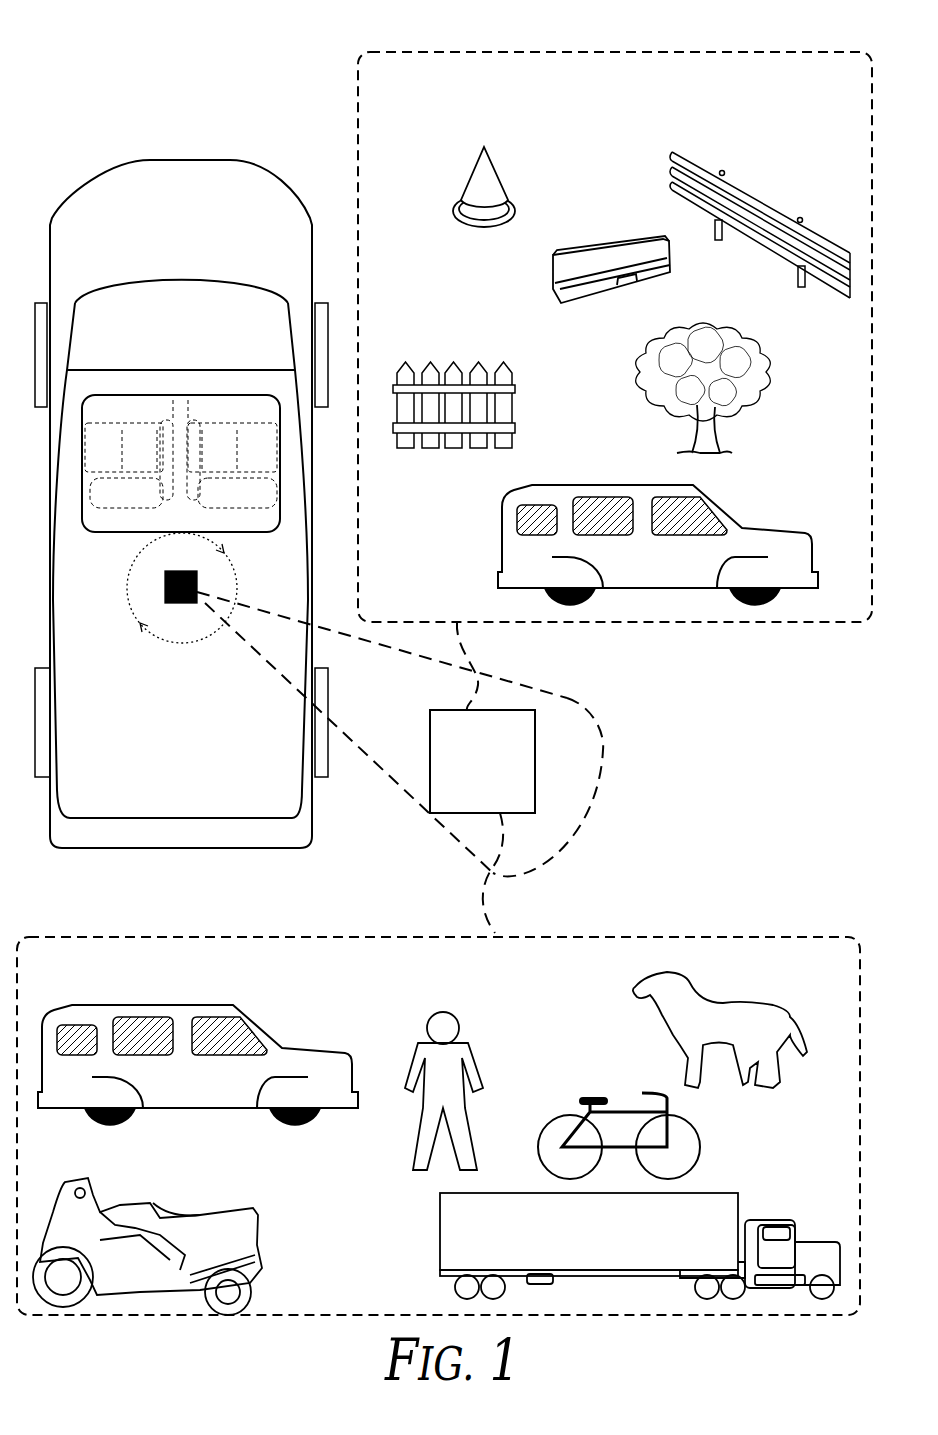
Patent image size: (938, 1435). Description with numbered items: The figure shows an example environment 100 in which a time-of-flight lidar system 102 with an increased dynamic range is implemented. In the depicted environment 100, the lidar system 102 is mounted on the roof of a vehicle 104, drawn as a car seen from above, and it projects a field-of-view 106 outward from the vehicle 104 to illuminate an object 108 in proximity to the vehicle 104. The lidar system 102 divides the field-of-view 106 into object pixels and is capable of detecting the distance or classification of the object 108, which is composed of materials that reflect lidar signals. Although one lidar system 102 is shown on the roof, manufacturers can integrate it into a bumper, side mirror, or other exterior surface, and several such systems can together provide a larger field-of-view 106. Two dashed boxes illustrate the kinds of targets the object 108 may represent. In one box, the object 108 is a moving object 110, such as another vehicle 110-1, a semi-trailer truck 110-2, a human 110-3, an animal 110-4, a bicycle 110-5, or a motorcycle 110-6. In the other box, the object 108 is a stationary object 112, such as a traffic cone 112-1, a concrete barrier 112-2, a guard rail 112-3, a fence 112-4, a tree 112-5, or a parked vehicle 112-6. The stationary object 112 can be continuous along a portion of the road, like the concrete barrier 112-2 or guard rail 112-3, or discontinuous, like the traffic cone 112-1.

The environment 100 is at (96, 34).
The ToF lidar system 102 is at (182, 605).
The vehicle 104 is at (193, 160).
The field-of-view 106 is at (583, 698).
The object 108 is at (535, 763).
The moving object 110 is at (455, 995).
The vehicle 110-1 is at (263, 1028).
The semi-trailer truck 110-2 is at (438, 1227).
The human 110-3 is at (475, 1052).
The animal 110-4 is at (730, 1002).
The bicycle 110-5 is at (697, 1137).
The motorcycle 110-6 is at (137, 1202).
The stationary object 112 is at (633, 110).
The traffic cone 112-1 is at (470, 178).
The concrete barrier 112-2 is at (550, 282).
The guard rail 112-3 is at (672, 172).
The fence 112-4 is at (513, 375).
The tree 112-5 is at (735, 345).
The parked vehicle 112-6 is at (738, 523).